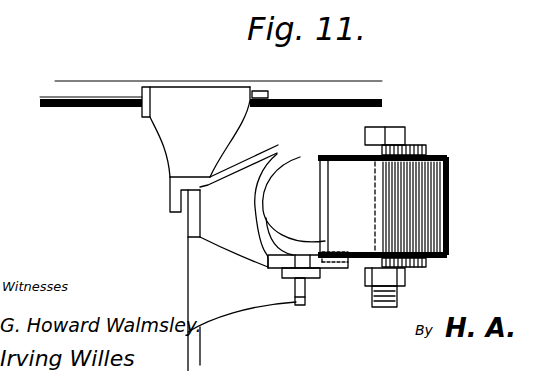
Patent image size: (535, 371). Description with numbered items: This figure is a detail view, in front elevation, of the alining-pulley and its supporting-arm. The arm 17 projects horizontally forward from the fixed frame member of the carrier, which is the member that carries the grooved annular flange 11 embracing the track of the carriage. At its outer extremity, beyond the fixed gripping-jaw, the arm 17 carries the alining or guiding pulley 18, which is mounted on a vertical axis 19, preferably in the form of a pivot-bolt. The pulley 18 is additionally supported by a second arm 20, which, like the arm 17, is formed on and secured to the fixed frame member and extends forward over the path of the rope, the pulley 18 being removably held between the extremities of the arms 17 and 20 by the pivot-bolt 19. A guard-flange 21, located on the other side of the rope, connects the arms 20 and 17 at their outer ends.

The grooved annular flange 11 is at (103, 92).
The arm 17 is at (259, 297).
The alining or guiding pulley 18 is at (445, 200).
The vertical axis 19 is at (398, 133).
The second arm 20 is at (275, 152).
The guard-flange 21 is at (257, 205).